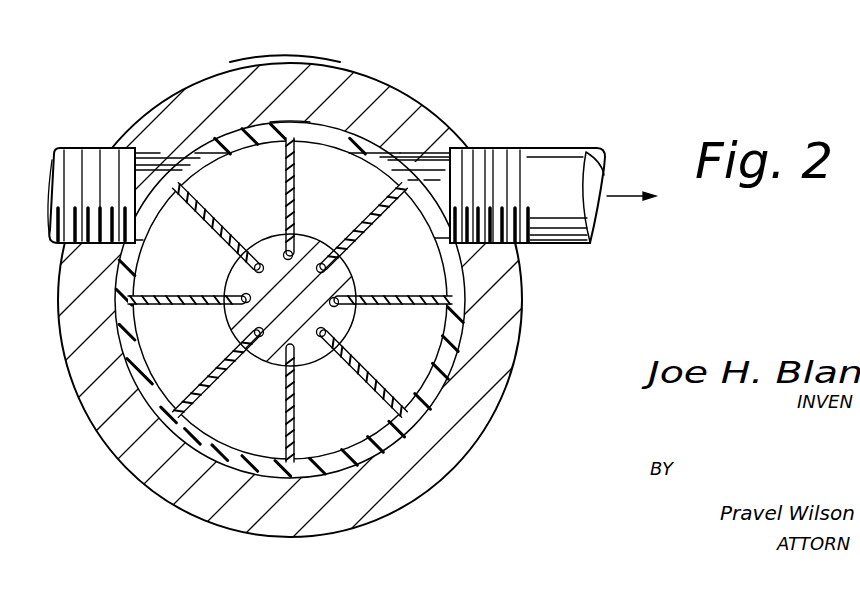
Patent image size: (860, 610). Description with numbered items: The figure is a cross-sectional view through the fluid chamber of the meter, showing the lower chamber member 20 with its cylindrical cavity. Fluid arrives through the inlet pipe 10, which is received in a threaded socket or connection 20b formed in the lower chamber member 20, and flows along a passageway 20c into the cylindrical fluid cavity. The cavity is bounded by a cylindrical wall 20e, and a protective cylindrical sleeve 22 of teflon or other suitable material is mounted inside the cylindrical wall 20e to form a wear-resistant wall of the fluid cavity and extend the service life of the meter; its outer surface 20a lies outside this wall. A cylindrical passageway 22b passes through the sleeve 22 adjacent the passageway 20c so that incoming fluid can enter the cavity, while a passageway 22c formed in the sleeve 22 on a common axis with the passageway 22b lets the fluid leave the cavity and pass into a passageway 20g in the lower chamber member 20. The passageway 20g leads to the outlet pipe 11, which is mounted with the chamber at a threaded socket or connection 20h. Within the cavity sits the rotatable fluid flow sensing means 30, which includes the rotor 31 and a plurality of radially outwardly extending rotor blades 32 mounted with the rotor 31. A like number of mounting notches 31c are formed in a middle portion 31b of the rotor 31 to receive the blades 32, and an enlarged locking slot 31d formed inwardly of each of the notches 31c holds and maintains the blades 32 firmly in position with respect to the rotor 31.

The inlet pipe 10 is at (80, 148).
The outlet pipe 11 is at (602, 148).
The lower chamber member 20 is at (358, 80).
The outer wall surface 20a is at (282, 62).
The threaded socket 20b is at (119, 148).
The passageway 20c is at (141, 152).
The cylindrical wall 20e is at (291, 121).
The passageway 20g is at (420, 152).
The threaded socket 20h is at (458, 148).
The protective cylindrical sleeve 22 is at (468, 322).
The cylindrical passageway 22b is at (207, 152).
The passageway 22c is at (382, 152).
The rotatable fluid flow sensing means 30 is at (307, 195).
The rotor 31 is at (283, 316).
The middle portion 31b is at (292, 248).
The mounting notches 31c is at (242, 274).
The enlarged locking slot 31d is at (270, 248).
The rotor blades 32 is at (285, 168).